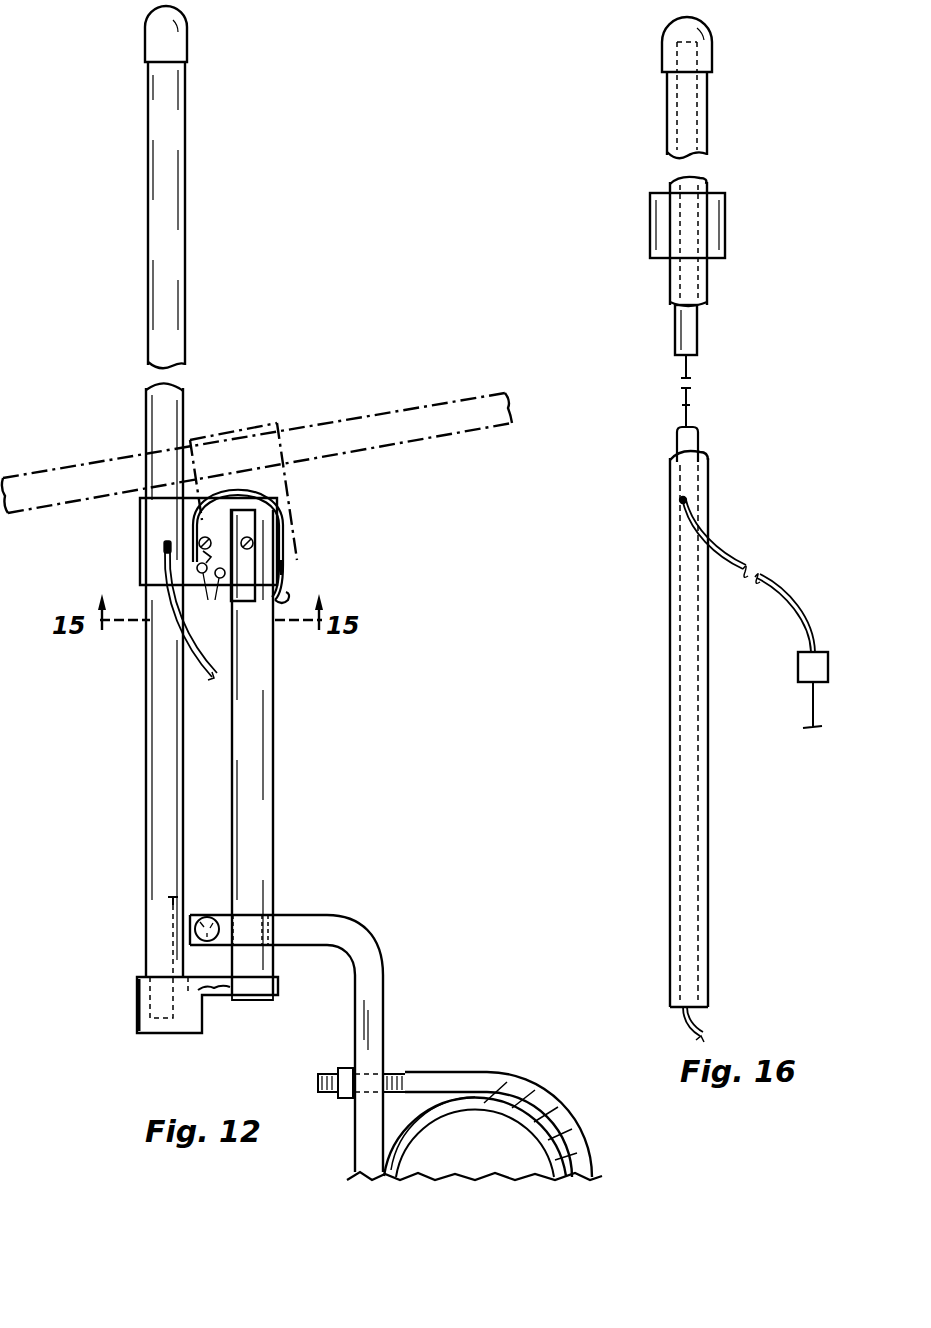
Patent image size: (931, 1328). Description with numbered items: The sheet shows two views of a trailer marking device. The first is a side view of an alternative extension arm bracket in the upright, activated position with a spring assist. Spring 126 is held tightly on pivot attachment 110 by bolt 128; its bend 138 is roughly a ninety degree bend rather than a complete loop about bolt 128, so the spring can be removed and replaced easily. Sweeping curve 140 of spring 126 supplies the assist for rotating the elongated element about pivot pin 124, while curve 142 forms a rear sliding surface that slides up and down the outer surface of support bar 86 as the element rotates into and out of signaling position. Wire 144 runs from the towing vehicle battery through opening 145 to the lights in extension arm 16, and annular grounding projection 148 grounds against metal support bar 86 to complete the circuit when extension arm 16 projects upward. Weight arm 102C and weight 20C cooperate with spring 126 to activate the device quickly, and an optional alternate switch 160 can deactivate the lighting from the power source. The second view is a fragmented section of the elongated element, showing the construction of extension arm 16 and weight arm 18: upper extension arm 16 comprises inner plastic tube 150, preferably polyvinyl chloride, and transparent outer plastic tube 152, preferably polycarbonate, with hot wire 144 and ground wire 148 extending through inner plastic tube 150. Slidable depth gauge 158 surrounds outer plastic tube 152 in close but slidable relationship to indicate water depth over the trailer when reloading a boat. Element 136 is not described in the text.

In FIG. 12, the extension arm 16 is at (150, 178).
In FIG. 16, the extension arm 16 is at (708, 104).
In FIG. 16, the weight arm 18 is at (708, 715).
In FIG. 12, the weight 20C is at (137, 1015).
In FIG. 12, the support bar 86 is at (275, 797).
In FIG. 12, the weight arm 102C is at (146, 840).
In FIG. 12, the pivot attachment 110 is at (185, 492).
In FIG. 12, the pivot pin 124 is at (270, 540).
In FIG. 12, the spring 126 is at (280, 568).
In FIG. 12, the bolt 128 is at (197, 527).
In FIG. 12, the pivot pin 136 is at (213, 596).
In FIG. 12, the bend 138 is at (197, 568).
In FIG. 12, the sweeping curve 140 is at (262, 498).
In FIG. 12, the curve 142 is at (288, 600).
In FIG. 12, the wire 144 is at (205, 670).
In FIG. 16, the wire 144 is at (696, 368).
In FIG. 12, the opening 145 is at (167, 543).
In FIG. 16, the opening 145 is at (680, 500).
In FIG. 12, the annular grounding projection 148 is at (218, 997).
In FIG. 16, the annular grounding projection 148 is at (681, 413).
In FIG. 16, the inner plastic tube 150 is at (688, 335).
In FIG. 16, the outer plastic tube 152 is at (683, 136).
In FIG. 16, the slidable depth gauge 158 is at (713, 241).
In FIG. 16, the alternate switch 160 is at (828, 660).